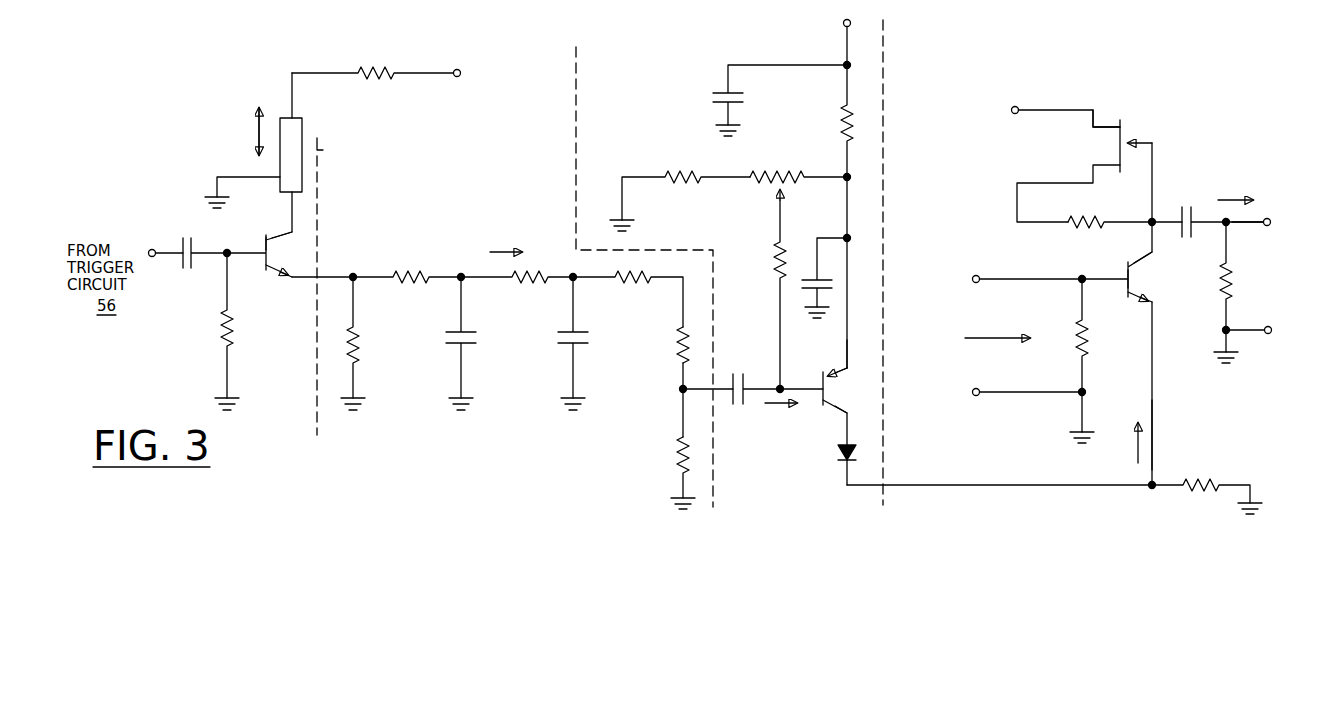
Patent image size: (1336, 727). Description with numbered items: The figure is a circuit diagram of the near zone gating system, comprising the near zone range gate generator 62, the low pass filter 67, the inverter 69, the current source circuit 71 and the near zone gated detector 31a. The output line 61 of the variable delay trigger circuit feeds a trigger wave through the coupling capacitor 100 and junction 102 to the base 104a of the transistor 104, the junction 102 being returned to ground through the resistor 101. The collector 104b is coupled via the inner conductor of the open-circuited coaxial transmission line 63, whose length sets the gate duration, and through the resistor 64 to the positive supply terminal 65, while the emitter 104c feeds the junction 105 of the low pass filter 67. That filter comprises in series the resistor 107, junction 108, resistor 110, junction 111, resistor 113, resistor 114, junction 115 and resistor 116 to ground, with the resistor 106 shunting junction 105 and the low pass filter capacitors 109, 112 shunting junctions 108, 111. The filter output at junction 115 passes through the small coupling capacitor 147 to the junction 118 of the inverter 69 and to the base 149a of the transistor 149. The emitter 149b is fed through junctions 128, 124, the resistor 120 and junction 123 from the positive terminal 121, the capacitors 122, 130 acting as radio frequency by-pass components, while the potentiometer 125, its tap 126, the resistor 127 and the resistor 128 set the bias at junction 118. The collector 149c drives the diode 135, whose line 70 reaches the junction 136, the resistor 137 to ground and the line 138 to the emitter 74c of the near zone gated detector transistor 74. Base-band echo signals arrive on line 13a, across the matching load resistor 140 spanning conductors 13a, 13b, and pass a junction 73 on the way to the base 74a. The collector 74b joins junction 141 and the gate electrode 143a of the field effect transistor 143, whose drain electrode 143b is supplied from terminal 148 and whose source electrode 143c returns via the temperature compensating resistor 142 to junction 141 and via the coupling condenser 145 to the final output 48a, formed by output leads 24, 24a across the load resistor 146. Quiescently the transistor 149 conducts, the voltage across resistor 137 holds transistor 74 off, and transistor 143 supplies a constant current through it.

The output line 61 is at (168, 248).
The near zone range gate generator 62 is at (233, 158).
The coaxial transmission line 63 is at (302, 133).
The resistor 64 is at (366, 78).
The terminal 65 is at (461, 70).
The low pass filter 67 is at (496, 201).
The inverter 69 is at (731, 211).
The line 70 is at (849, 488).
The current source circuit 71 is at (1221, 176).
The junction 73 is at (1101, 279).
The near zone gated detector transistor 74 is at (1169, 291).
The base 74a is at (1126, 271).
The collector 74b is at (1142, 257).
The emitter 74c is at (1146, 303).
The coupling capacitor 100 is at (180, 262).
The resistor 101 is at (222, 322).
The junction 102 is at (223, 250).
The transistor 104 is at (284, 257).
The base 104a is at (264, 240).
The collector 104b is at (290, 237).
The emitter 104c is at (291, 278).
The junction 105 is at (355, 272).
The resistor 106 is at (402, 358).
The resistor 107 is at (396, 282).
The junction 108 is at (458, 272).
The low pass filter capacitor 109 is at (468, 345).
The resistor 110 is at (541, 285).
The junction 111 is at (571, 270).
The low pass filter capacitor 112 is at (580, 345).
The resistor 113 is at (648, 285).
The resistor 114 is at (680, 338).
The junction 115 is at (680, 392).
The resistor 116 is at (680, 452).
The junction 118 is at (778, 382).
The resistor 120 is at (852, 131).
The terminal 121 is at (843, 23).
The capacitor 122 is at (711, 93).
The junction 123 is at (851, 62).
The junction 124 is at (852, 179).
The potentiometer 125 is at (789, 172).
The tap 126 is at (784, 200).
The resistor 127 is at (776, 252).
The resistor / junction 128 is at (851, 240).
The capacitor 130 is at (815, 268).
The diode 135 is at (841, 455).
The junction 136 is at (1150, 490).
The resistor 137 is at (1195, 479).
The line 138 is at (1155, 441).
The matching load resistor 140 is at (1078, 336).
The junction 141 is at (1156, 218).
The resistor 142 is at (1076, 218).
The field effect transistor 143 is at (1124, 102).
The gate electrode 143a is at (1124, 136).
The drain electrode 143b is at (1085, 112).
The source electrode 143c is at (1090, 168).
The coupling condenser 145 is at (1197, 206).
The load resistor 146 is at (1236, 283).
The coupling capacitor 147 is at (758, 408).
The terminal 148 is at (1019, 93).
The transistor 149 is at (866, 401).
The base 149a is at (832, 372).
The emitter 149b is at (852, 370).
The collector 149c is at (841, 410).
The line 13a is at (1033, 275).
The conductor 13b is at (1045, 395).
The output lead 24 is at (1270, 218).
The output lead 24a is at (1268, 338).
The near zone gated detector 31a is at (1211, 326).
The final output 48a is at (1250, 225).